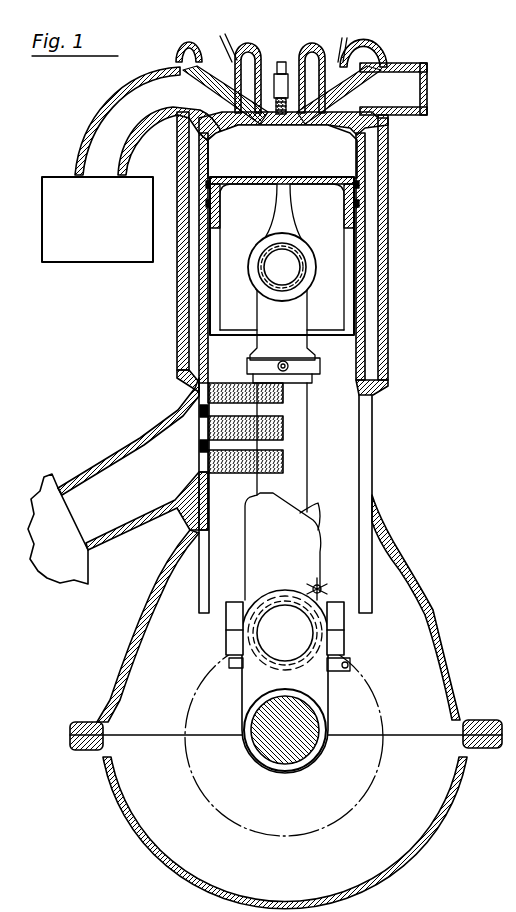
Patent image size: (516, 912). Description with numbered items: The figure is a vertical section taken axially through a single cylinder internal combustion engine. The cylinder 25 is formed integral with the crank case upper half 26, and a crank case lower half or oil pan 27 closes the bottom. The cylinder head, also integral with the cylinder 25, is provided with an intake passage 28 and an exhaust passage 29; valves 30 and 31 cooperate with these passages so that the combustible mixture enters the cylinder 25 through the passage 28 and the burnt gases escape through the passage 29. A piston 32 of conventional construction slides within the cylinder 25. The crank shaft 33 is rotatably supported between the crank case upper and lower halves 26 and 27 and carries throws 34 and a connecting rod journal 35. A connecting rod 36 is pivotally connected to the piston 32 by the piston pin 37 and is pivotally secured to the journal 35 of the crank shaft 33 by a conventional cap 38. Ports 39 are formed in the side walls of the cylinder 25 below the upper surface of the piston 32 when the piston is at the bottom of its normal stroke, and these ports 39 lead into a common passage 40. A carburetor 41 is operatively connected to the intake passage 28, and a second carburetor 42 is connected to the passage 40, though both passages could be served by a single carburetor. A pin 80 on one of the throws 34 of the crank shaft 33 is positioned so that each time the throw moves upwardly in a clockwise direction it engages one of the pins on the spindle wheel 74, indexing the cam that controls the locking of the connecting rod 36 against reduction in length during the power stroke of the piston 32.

The cylinder 25 is at (374, 412).
The crank case upper half 26 is at (434, 604).
The crank case lower half or oil pan 27 is at (438, 824).
The intake passage 28 is at (171, 120).
The exhaust passage 29 is at (362, 93).
The valve 30 is at (222, 42).
The valve 31 is at (339, 43).
The piston 32 is at (262, 180).
The crank shaft 33 is at (316, 753).
The throw 34 is at (320, 688).
The connecting rod journal 35 is at (335, 628).
The connecting rod 36 is at (298, 313).
The piston pin 37 is at (300, 264).
The cap 38 is at (226, 648).
The ports 39 is at (200, 425).
The common passage 40 is at (133, 464).
The carburetor 41 is at (97, 219).
The second carburetor 42 is at (58, 529).
The spindle wheel 74 is at (327, 591).
The pin 80 is at (350, 666).